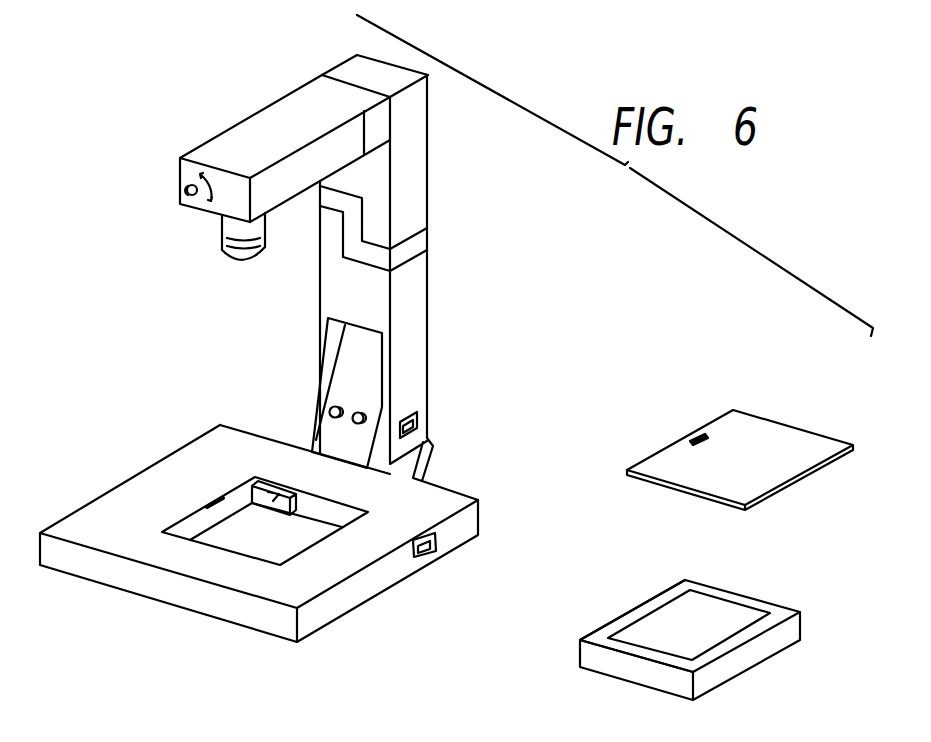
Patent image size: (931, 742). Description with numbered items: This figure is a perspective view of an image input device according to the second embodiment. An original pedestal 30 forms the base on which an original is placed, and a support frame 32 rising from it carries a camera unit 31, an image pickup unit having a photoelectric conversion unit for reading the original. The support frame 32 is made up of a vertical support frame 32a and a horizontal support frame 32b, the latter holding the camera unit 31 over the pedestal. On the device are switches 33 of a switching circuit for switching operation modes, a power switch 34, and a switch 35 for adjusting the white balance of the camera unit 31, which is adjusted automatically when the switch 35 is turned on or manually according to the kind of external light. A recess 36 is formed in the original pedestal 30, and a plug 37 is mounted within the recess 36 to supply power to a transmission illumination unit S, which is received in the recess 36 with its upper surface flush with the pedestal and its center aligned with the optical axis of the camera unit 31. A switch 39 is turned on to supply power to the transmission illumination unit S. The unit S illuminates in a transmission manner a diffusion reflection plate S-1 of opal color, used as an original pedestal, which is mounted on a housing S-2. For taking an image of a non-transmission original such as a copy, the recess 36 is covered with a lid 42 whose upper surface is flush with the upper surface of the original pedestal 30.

The original pedestal 30 is at (177, 556).
The camera unit 31 is at (235, 260).
The support frame 32 is at (418, 294).
The vertical support frame 32a is at (415, 184).
The horizontal support frame 32b is at (223, 142).
The switches 33 is at (326, 409).
The power switch 34 is at (418, 421).
The white balance switch 35 is at (186, 204).
The recess 36 is at (218, 533).
The plug 37 is at (253, 478).
The switch 39 is at (433, 552).
The lid 42 is at (797, 445).
The transmission illumination unit S is at (785, 610).
The diffusion reflection plate S-1 is at (665, 617).
The housing S-2 is at (598, 637).